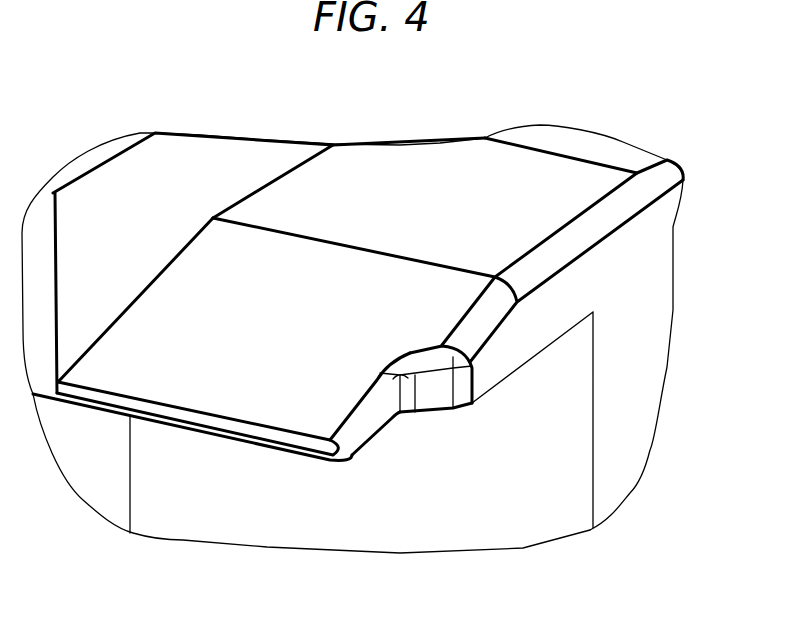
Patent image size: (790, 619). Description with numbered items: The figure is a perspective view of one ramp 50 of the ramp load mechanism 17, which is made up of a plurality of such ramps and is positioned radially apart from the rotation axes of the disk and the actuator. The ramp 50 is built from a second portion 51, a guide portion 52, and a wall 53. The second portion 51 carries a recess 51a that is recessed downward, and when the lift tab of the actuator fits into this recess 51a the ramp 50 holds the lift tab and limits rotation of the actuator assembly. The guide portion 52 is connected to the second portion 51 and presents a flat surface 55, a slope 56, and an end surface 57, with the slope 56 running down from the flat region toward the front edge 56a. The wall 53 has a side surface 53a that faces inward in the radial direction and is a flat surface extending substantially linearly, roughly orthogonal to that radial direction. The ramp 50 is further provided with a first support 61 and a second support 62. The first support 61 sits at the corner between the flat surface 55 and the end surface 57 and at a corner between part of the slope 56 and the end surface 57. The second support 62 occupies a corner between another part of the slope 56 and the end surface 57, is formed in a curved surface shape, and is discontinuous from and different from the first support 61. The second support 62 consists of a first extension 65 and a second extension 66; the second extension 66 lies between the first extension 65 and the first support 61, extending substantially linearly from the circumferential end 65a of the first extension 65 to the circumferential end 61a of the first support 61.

The ramp load mechanism 17 is at (352, 300).
The ramp 50 is at (608, 115).
The second portion 51 is at (584, 122).
The recess 51a is at (560, 138).
The guide portion 52 is at (354, 182).
The flat surface 55 is at (358, 160).
The wall 53 is at (193, 153).
The side surface 53a is at (200, 150).
The slope 56 is at (180, 283).
The bottom plate edge 56a is at (215, 430).
The end surface 57 is at (657, 313).
The first support 61 is at (497, 297).
The end of the first support 61a is at (467, 365).
The second support 62 is at (370, 486).
The first extension 65 is at (370, 415).
The end of the first extension 65a is at (427, 367).
The second extension 66 is at (450, 363).